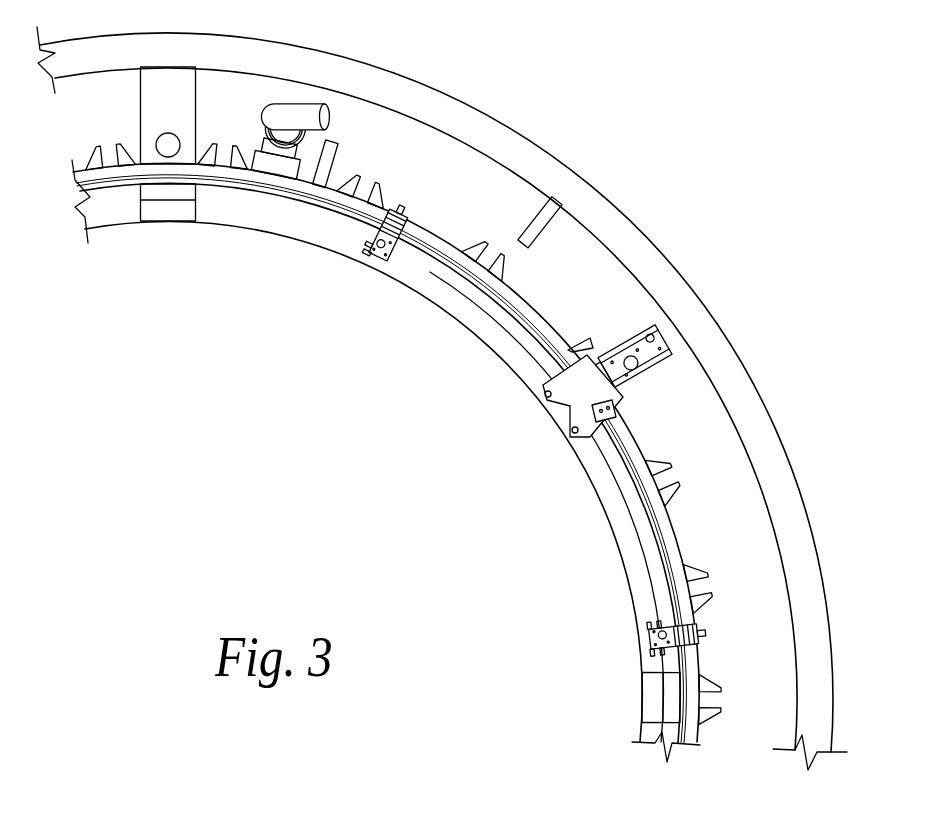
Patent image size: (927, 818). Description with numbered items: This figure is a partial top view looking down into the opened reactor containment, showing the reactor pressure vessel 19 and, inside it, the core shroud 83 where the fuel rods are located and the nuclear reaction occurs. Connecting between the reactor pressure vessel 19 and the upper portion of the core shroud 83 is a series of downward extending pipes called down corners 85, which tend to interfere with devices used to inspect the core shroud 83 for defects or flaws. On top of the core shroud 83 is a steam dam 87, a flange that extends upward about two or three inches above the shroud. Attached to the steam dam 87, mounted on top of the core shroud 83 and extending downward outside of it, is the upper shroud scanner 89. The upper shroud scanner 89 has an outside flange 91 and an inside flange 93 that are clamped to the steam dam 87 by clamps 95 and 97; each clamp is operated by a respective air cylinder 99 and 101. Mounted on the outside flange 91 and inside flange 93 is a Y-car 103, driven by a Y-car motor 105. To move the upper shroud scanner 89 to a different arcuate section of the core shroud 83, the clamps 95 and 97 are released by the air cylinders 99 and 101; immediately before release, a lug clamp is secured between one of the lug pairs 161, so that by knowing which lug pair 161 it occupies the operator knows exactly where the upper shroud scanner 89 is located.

The reactor pressure vessel 19 is at (442, 398).
The core shroud 83 is at (363, 482).
The down corners 85 is at (312, 137).
The steam dam 87 is at (150, 162).
The upper shroud scanner 89 is at (626, 324).
The outside flange 91 is at (386, 461).
The inside flange 93 is at (381, 459).
The clamp 95 is at (354, 266).
The clamp 97 is at (641, 681).
The air cylinder 99 is at (410, 223).
The air cylinder 101 is at (702, 644).
The Y-car 103 is at (583, 387).
The Y-car motor 105 is at (628, 416).
The lug pairs 161 is at (401, 425).